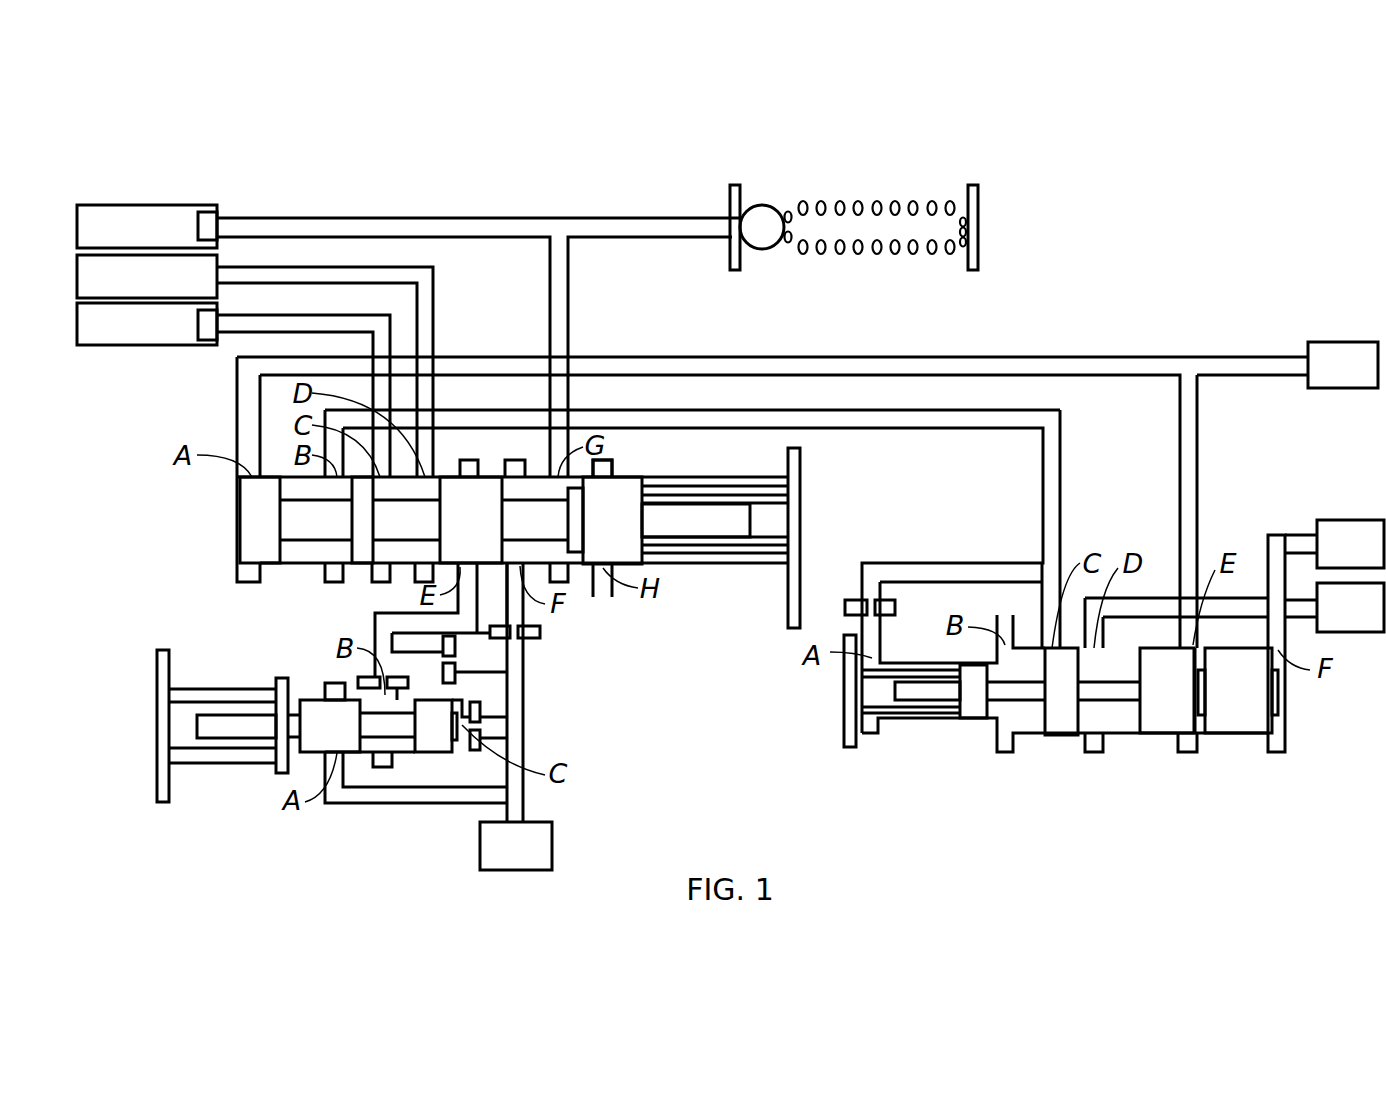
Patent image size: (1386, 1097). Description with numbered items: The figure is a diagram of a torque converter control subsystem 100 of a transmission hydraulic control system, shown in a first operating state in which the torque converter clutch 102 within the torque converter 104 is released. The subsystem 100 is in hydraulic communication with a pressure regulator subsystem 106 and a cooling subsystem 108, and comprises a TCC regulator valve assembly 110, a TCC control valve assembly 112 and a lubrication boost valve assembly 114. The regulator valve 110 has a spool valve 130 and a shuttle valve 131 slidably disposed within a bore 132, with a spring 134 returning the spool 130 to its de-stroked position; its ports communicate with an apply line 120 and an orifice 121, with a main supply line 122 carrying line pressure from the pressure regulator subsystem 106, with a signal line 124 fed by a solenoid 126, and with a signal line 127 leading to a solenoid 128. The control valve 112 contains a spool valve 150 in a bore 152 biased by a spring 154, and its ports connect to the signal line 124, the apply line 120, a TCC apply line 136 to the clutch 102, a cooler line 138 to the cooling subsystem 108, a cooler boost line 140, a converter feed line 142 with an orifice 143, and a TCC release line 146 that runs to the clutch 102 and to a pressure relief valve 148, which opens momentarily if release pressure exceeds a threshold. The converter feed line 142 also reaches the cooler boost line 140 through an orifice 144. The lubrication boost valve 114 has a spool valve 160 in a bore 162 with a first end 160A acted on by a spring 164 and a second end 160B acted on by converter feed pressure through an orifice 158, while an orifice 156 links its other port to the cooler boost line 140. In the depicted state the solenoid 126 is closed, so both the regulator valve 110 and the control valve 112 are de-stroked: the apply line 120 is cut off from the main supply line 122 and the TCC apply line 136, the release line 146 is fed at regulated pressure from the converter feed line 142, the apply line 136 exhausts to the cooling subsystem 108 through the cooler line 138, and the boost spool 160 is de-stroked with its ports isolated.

The torque converter control subsystem 100 is at (1268, 236).
The torque converter clutch 102 is at (208, 212).
The torque converter 104 is at (170, 205).
The pressure regulator subsystem 106 is at (932, 726).
The cooling subsystem 108 is at (125, 253).
The TCC regulator valve assembly 110 is at (820, 735).
The TCC control valve assembly 112 is at (813, 492).
The lubrication boost valve assembly 114 is at (133, 752).
The apply line 120 is at (1060, 470).
The orifice 121 is at (888, 600).
The main supply line 122 is at (1162, 597).
The signal line 124 is at (1072, 357).
The solenoid 126 is at (1343, 365).
The signal line 127 is at (1280, 537).
The solenoid 128 is at (1350, 544).
The spool valve 130 is at (977, 703).
The shuttle valve 131 is at (1243, 707).
The bore 132 is at (943, 710).
The spring 134 is at (888, 717).
The TCC apply line 136 is at (283, 315).
The cooler line 138 is at (378, 267).
The cooler boost line 140 is at (403, 613).
The converter feed line 142 is at (523, 660).
The orifice 143 is at (540, 633).
The orifice 144 is at (455, 677).
The TCC release line 146 is at (568, 287).
The pressure relief valve 148 is at (765, 210).
The spool valve 150 is at (627, 517).
The bore 152 is at (634, 482).
The spring 154 is at (713, 548).
The orifice 156 is at (397, 695).
The orifice 158 is at (482, 740).
The spool valve 160 is at (315, 710).
The first end 160A is at (277, 682).
The second end 160B is at (466, 757).
The bore 162 is at (418, 740).
The spring 164 is at (222, 753).